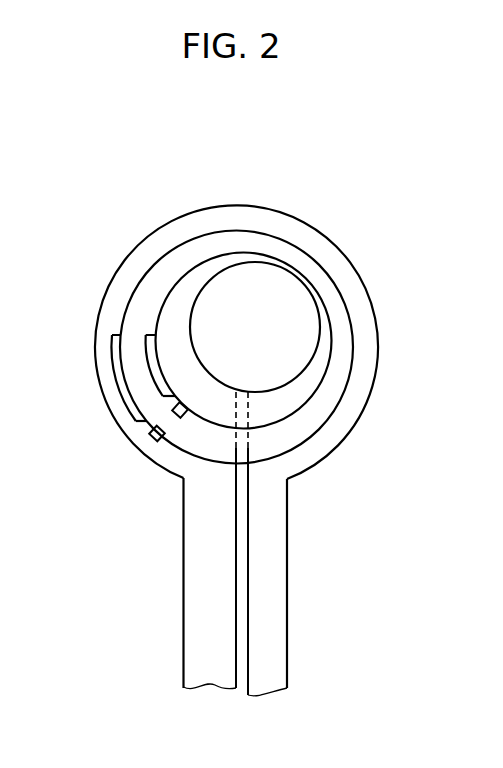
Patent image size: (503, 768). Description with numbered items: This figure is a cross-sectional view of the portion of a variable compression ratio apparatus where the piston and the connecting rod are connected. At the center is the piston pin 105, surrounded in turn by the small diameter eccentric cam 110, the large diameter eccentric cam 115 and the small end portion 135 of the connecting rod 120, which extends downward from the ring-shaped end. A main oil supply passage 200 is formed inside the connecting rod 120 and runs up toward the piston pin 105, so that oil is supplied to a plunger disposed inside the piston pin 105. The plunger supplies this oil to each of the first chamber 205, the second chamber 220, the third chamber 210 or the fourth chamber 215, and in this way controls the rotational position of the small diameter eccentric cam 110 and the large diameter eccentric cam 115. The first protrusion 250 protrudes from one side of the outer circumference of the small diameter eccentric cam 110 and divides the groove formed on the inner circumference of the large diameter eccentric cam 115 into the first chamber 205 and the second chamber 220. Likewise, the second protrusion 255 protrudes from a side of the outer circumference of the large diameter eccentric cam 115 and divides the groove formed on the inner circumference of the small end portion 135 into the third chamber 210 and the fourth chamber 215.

The piston pin 105 is at (307, 328).
The small diameter eccentric cam 110 is at (195, 278).
The large diameter eccentric cam 115 is at (318, 408).
The connecting rod 120 is at (198, 630).
The small end portion 135 is at (123, 282).
The main oil supply passage 200 is at (252, 582).
The first chamber 205 is at (177, 417).
The third chamber 210 is at (152, 445).
The fourth chamber 215 is at (113, 363).
The second chamber 220 is at (147, 337).
The first protrusion 250 is at (162, 398).
The second protrusion 255 is at (150, 430).